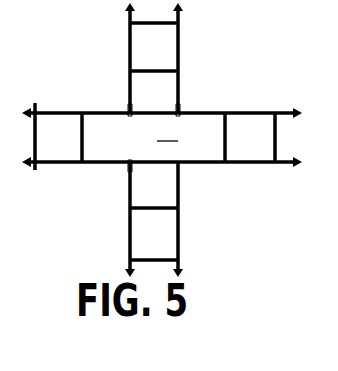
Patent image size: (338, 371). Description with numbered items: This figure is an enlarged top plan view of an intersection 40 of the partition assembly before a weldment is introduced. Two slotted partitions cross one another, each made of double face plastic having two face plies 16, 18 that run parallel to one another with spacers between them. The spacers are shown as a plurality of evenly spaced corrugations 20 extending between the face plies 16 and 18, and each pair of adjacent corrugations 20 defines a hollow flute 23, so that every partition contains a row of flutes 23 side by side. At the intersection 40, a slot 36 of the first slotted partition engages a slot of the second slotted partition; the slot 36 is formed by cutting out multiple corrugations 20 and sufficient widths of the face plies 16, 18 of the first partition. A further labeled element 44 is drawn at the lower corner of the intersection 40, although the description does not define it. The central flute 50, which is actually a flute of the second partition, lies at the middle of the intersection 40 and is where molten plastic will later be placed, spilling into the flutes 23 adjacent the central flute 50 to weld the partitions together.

The face ply 16 is at (128, 32).
The face ply 18 is at (181, 27).
The corrugations 20 is at (158, 223).
The hollow flute 23 is at (165, 51).
The slot 36 is at (180, 110).
The intersection 40 is at (128, 110).
The lower left joint 44 is at (128, 165).
The central flute 50 is at (178, 141).